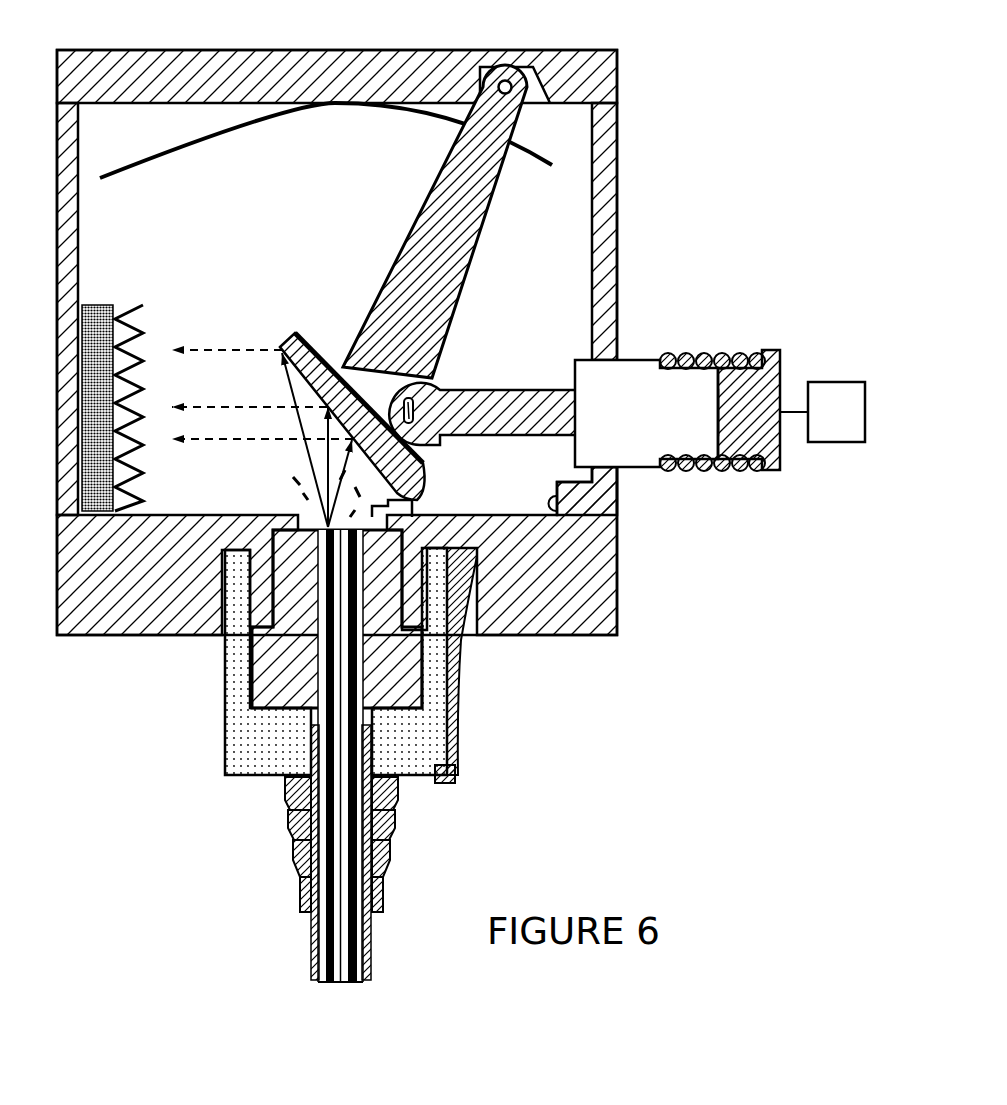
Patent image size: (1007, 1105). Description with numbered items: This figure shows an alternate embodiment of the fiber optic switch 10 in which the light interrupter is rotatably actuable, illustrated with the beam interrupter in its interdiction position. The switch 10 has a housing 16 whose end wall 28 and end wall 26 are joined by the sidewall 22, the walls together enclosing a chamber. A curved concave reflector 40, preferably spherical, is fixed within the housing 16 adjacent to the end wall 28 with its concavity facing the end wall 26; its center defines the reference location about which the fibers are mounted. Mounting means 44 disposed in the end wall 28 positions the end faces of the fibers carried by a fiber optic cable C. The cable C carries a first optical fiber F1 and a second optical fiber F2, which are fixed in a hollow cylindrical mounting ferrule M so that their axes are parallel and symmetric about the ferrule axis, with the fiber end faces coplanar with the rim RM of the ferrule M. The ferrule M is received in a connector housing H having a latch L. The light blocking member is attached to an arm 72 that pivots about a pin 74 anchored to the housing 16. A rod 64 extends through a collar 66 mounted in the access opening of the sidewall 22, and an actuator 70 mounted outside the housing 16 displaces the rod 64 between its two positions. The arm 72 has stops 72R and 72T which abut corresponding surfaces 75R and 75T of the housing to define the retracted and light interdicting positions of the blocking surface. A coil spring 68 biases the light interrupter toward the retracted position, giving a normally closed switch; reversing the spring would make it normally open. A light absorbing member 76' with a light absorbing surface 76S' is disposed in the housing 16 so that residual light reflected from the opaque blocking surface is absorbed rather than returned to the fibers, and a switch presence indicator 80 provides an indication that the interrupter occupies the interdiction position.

The switch 10 is at (725, 73).
The housing 16 is at (618, 52).
The sidewall 22 is at (618, 233).
The end wall 26 is at (520, 636).
The end wall 28 is at (392, 50).
The curved concave reflector 40 is at (289, 110).
The mounting means 44 is at (245, 793).
The rod 64 is at (773, 472).
The collar 66 is at (636, 360).
The coil spring 68 is at (728, 471).
The actuator 70 is at (822, 412).
The arm 72 is at (446, 192).
The stop 72R is at (470, 490).
The stop 72T is at (416, 478).
The pin 74 is at (497, 67).
The housing surface 75R is at (548, 503).
The housing surface 75T is at (416, 510).
The light absorbing member 76' is at (146, 383).
The light absorbing surface 76S' is at (163, 403).
The switch presence indicator 80 is at (142, 392).
The fiber optic cable C is at (311, 943).
The first optical fiber F1 is at (322, 983).
The second optical fiber F2 is at (355, 983).
The connector housing H is at (250, 777).
The latch L is at (466, 672).
The mounting ferrule M is at (253, 675).
The rim RM is at (290, 522).